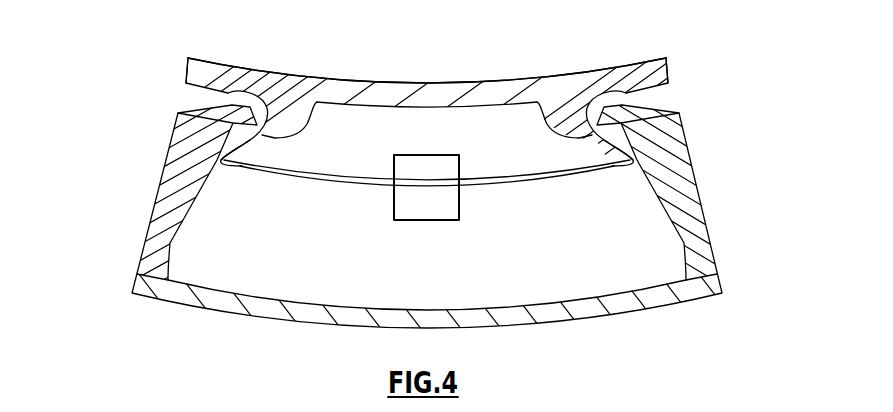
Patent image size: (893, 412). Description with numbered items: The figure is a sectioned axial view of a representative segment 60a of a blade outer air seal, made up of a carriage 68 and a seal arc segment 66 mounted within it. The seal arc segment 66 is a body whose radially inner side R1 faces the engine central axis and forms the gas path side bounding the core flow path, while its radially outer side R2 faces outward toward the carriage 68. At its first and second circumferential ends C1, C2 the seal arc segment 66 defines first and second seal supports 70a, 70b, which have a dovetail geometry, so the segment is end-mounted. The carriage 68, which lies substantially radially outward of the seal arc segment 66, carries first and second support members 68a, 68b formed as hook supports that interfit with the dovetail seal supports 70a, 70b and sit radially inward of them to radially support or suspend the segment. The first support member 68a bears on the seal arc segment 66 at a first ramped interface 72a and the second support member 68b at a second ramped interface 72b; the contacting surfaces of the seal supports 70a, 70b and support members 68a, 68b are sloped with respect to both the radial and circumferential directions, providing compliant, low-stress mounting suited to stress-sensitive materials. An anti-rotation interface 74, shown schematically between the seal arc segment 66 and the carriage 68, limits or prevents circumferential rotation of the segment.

The segment of the BOAS 60a is at (138, 183).
The seal arc segment 66 is at (376, 90).
The carriage 68 is at (708, 230).
The first support member 68a is at (599, 123).
The second support member 68b is at (256, 124).
The first seal support 70a is at (597, 125).
The second seal support 70b is at (257, 125).
The first ramped interface 72a is at (601, 145).
The second ramped interface 72b is at (253, 141).
The anti-rotation interface 74 is at (422, 207).
The radially inner side R1 is at (446, 83).
The radially outer side R2 is at (363, 181).
The first circumferential end C1 is at (669, 83).
The second circumferential end C2 is at (186, 83).